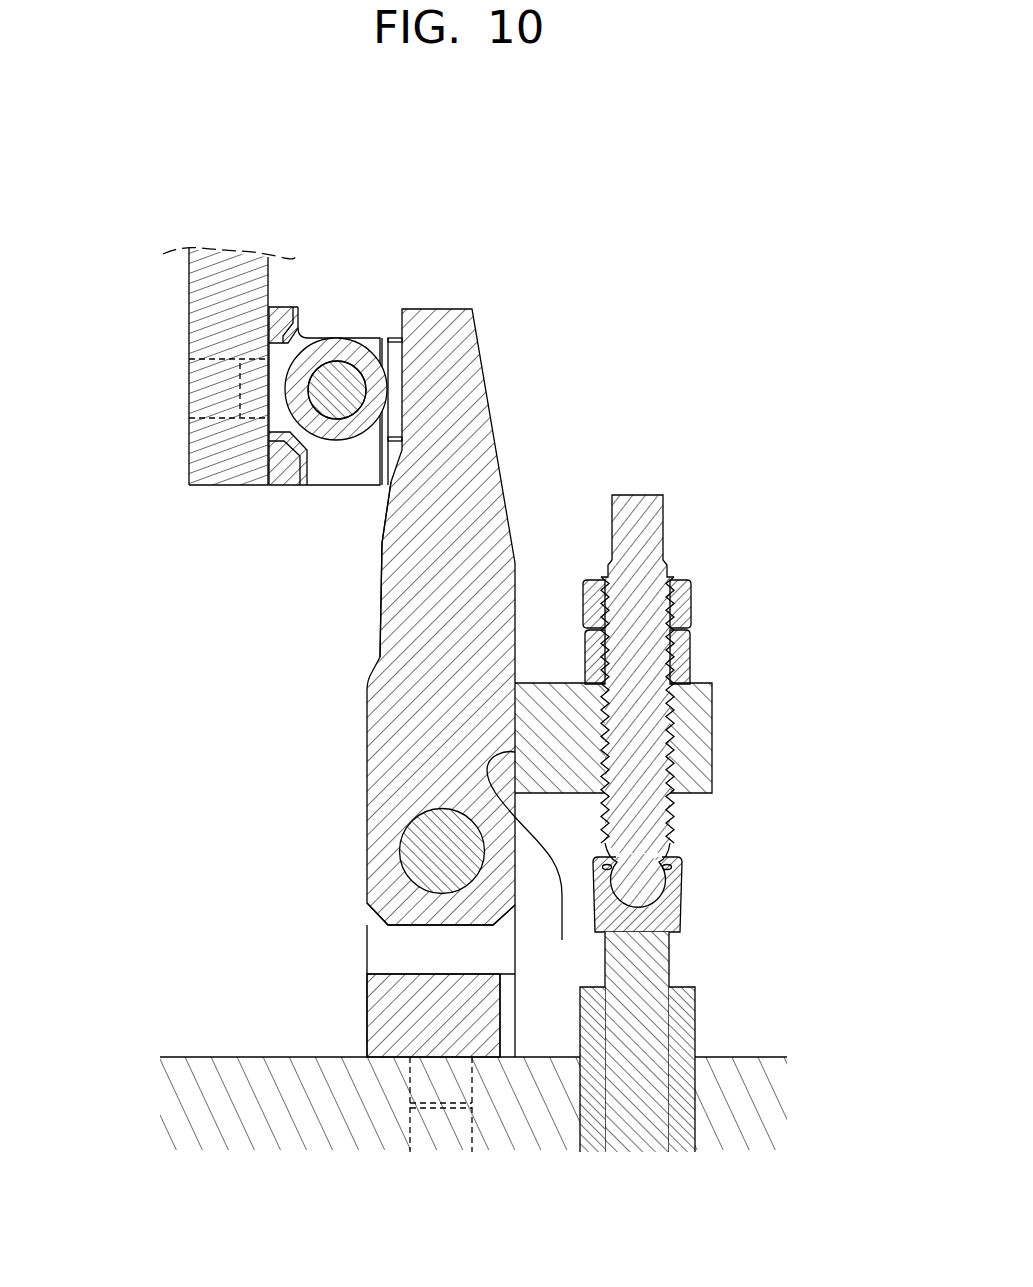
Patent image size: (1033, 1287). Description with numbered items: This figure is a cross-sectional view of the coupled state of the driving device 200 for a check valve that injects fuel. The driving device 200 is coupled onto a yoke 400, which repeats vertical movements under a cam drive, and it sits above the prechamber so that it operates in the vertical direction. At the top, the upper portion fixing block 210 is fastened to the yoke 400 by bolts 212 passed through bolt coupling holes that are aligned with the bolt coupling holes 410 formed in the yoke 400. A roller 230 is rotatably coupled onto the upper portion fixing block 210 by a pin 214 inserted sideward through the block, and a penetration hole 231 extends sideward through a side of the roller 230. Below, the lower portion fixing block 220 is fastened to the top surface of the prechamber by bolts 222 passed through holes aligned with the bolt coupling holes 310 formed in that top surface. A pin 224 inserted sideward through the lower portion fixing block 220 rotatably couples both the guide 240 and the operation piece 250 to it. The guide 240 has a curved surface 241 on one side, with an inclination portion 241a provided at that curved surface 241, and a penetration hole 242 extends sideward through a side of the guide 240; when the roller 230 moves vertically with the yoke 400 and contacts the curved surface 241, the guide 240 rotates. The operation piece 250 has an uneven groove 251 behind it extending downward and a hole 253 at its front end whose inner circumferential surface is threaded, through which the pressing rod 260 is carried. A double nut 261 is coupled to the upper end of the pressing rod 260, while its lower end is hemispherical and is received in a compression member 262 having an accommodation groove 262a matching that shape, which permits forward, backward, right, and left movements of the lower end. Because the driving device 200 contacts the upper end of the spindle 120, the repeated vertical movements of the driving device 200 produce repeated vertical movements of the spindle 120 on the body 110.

The body 110 is at (685, 1030).
The spindle 120 is at (648, 965).
The driving device 200 is at (263, 752).
The upper portion fixing block 210 is at (330, 492).
The bolts 212 is at (257, 383).
The pin 214 is at (337, 382).
The lower portion fixing block 220 is at (387, 965).
The bolts 222 is at (447, 1090).
The pin 224 is at (427, 873).
The roller 230 is at (321, 328).
The penetration hole 231 is at (318, 403).
The guide 240 is at (435, 617).
The curved surface 241 is at (379, 595).
The inclination portion 241a is at (382, 527).
The penetration hole 242 is at (410, 856).
The operation piece 250 is at (658, 827).
The uneven groove 251 is at (536, 862).
The hole 253 is at (673, 808).
The pressing rod 260 is at (697, 712).
The double nut 261 is at (682, 603).
The compression member 262 is at (688, 887).
The accommodation groove 262a is at (648, 887).
The bolt coupling holes 310 is at (412, 1132).
The yoke 400 is at (188, 283).
The bolt coupling holes 410 is at (233, 358).